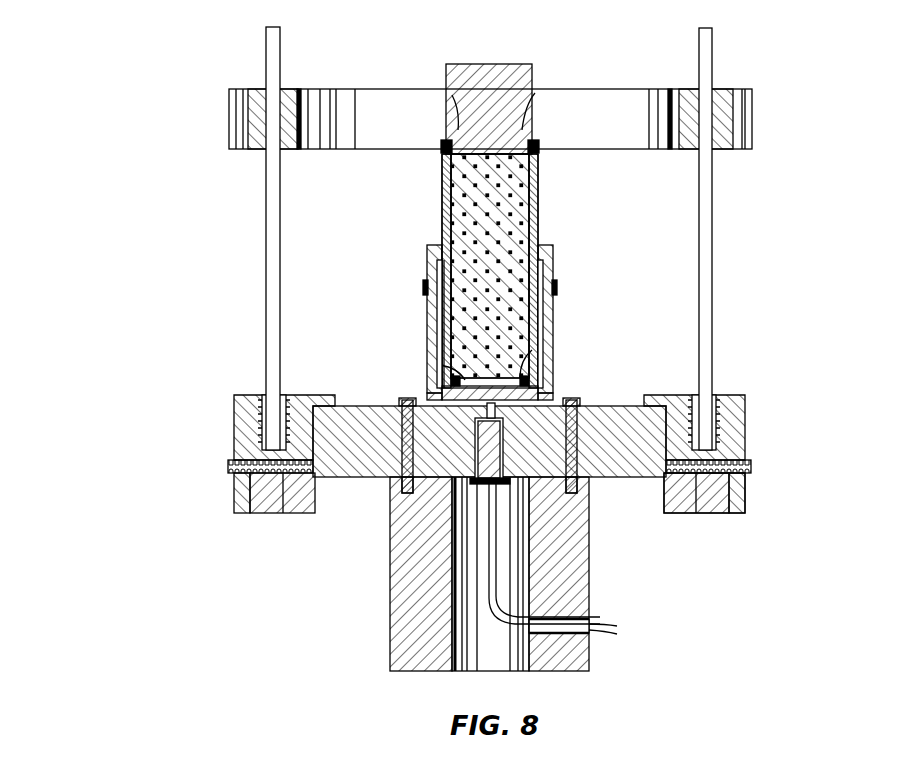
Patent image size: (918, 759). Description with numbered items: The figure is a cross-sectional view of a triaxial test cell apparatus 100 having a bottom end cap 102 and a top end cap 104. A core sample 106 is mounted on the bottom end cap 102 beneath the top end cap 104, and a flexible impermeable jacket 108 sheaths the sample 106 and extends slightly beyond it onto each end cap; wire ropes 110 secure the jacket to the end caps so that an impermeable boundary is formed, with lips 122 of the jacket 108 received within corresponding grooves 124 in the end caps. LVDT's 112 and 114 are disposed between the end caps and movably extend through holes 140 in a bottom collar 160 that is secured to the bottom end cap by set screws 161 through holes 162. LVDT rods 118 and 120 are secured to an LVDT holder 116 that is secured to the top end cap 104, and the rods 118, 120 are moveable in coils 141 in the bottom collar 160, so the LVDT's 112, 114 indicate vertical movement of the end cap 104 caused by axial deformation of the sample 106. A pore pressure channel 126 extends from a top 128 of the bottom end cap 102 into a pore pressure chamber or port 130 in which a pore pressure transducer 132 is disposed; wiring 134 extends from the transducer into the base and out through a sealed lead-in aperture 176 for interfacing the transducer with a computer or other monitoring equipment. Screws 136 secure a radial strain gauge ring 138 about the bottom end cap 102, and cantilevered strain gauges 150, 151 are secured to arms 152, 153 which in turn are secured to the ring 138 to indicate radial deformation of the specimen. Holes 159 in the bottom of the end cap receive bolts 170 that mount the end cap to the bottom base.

The triaxial test cell apparatus 100 is at (479, 349).
The bottom end cap 102 is at (605, 478).
The top end cap 104 is at (515, 66).
The core sample 106 is at (535, 192).
The flexible impermeable jacket 108 is at (530, 215).
The wire ropes 110 is at (442, 148).
The LVDT 112 is at (262, 392).
The LVDT 114 is at (718, 395).
The LVDT holder 116 is at (255, 93).
The LVDT rod 118 is at (266, 208).
The LVDT rod 120 is at (712, 225).
The lips 122 is at (535, 93).
The grooves 124 is at (452, 95).
The pore pressure channel 126 is at (447, 325).
The top of the bottom end cap 128 is at (443, 345).
The pore pressure chamber or port 130 is at (505, 475).
The pore pressure transducer 132 is at (410, 510).
The wiring 134 is at (487, 560).
The screws 136 is at (432, 393).
The radial strain gauge ring 138 is at (540, 322).
The holes 140 is at (262, 465).
The coils 141 is at (245, 412).
The cantilevered strain gauge 150 is at (424, 288).
The cantilevered strain gauge 151 is at (556, 288).
The arm 152 is at (428, 260).
The arm 153 is at (552, 260).
The holes 159 is at (400, 472).
The bottom collar 160 is at (748, 510).
The set screws 161 is at (247, 513).
The holes 162 is at (283, 513).
The bolts 170 is at (405, 410).
The sealed lead-in aperture 176 is at (572, 640).